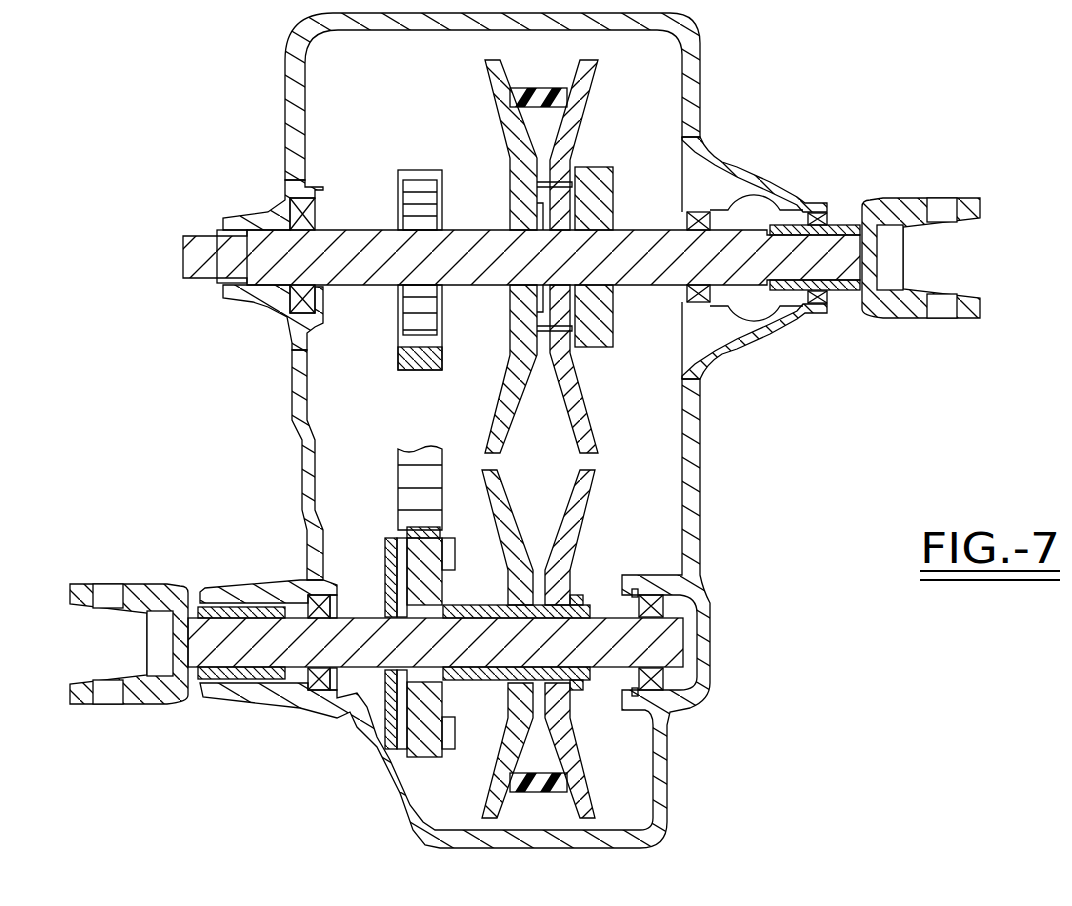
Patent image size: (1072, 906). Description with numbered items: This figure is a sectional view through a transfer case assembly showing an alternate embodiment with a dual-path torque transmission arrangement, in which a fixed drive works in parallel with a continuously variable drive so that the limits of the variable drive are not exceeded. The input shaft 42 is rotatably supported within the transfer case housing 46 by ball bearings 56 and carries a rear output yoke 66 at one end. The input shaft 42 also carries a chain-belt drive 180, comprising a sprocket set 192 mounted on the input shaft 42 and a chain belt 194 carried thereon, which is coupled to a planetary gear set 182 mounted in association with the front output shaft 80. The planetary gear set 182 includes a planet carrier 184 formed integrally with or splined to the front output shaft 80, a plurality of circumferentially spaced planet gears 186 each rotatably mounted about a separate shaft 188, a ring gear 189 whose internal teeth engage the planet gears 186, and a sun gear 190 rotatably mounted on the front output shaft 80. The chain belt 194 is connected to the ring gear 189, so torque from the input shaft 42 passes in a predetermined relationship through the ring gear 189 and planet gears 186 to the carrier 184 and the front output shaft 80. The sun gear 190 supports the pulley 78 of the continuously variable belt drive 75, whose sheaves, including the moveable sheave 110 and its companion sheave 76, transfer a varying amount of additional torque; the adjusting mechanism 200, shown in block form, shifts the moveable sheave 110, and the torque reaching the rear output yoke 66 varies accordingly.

The input shaft 42 is at (466, 275).
The transfer case housing 46 is at (735, 162).
The ball bearings 56 is at (682, 300).
The rear output yoke 66 is at (907, 320).
The continuously variable belt drive 75 is at (492, 110).
The fixed sheave of drive pulley 76 is at (588, 118).
The pulley 78 is at (551, 644).
The front output shaft 80 is at (372, 660).
The moveable sheave 110 is at (541, 256).
The chain-belt drive 180 is at (392, 468).
The planetary gear set 182 is at (385, 548).
The planet carrier 184 is at (385, 718).
The planet gears 186 is at (428, 743).
The shaft 188 is at (445, 582).
The ring gear 189 is at (400, 740).
The sun gear 190 is at (482, 668).
The sprocket set 192 is at (400, 203).
The chain belt 194 is at (400, 360).
The adjusting mechanism 200 is at (603, 165).